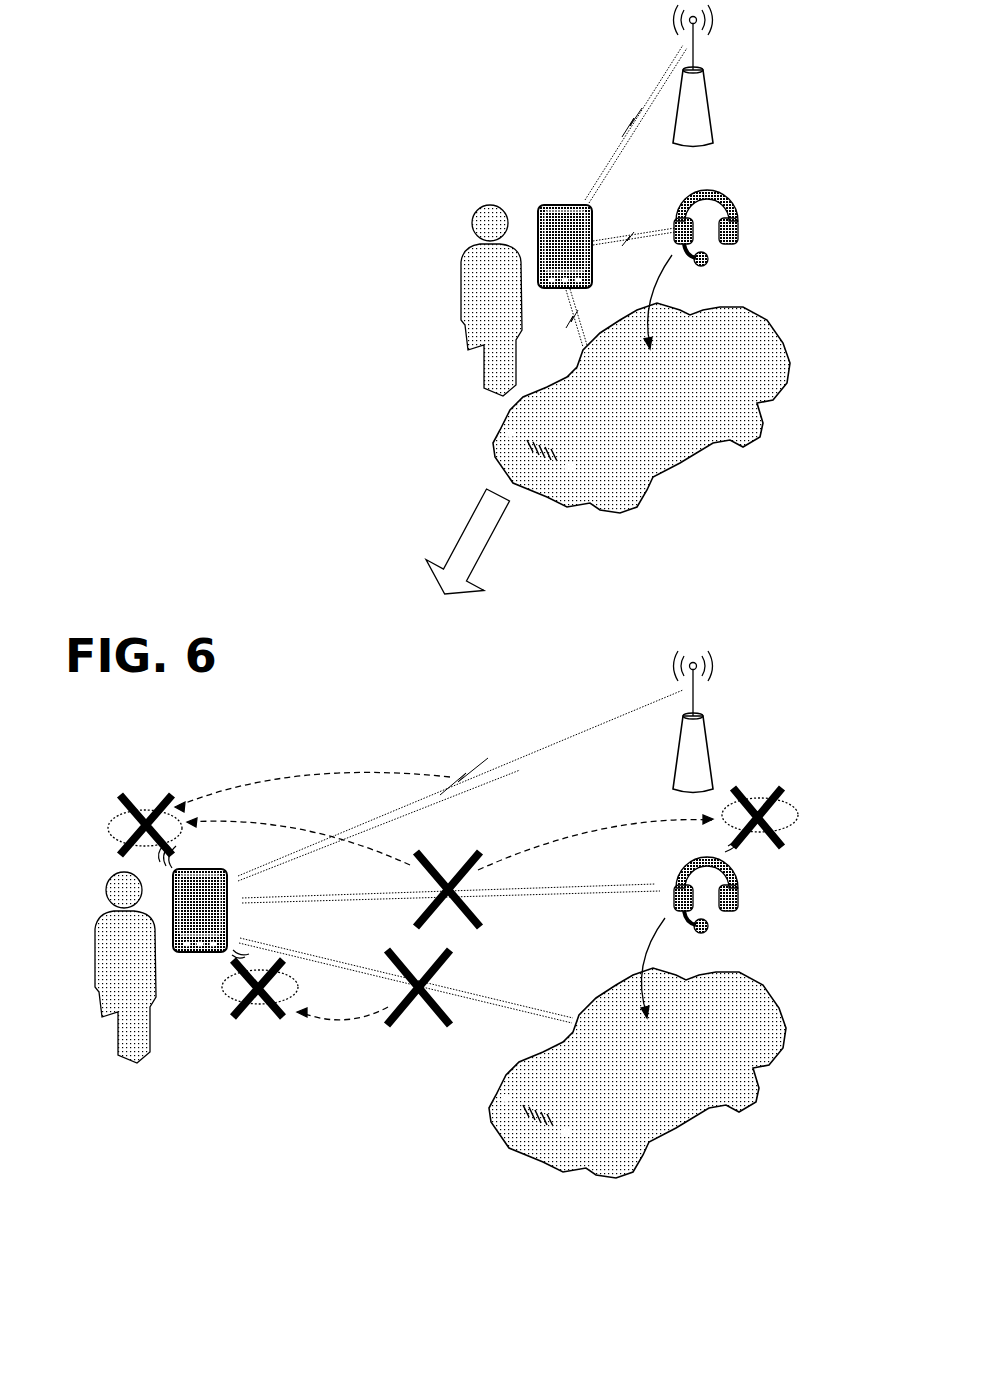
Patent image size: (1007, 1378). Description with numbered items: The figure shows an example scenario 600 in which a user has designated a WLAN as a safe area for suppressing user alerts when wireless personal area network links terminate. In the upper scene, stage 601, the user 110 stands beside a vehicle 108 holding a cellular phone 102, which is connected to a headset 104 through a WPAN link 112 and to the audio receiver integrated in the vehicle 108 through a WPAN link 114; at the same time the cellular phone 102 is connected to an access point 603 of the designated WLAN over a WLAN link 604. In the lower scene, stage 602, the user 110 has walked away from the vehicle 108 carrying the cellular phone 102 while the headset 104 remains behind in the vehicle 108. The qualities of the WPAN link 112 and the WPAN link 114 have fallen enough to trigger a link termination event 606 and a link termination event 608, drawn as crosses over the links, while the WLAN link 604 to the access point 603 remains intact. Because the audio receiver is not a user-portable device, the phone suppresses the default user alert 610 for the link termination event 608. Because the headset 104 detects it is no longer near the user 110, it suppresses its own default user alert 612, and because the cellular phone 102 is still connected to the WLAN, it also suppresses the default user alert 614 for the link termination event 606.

The scenario 600 is at (147, 469).
The stage 601 is at (754, 179).
The stage 602 is at (762, 756).
The access point 603 is at (716, 118).
The WLAN link 604 is at (633, 122).
The link termination event 606 is at (416, 915).
The link termination event 608 is at (440, 965).
The default user alert 610 is at (258, 1016).
The default user alert 612 is at (798, 816).
The default user alert 614 is at (143, 798).
The cellular phone 102 is at (567, 205).
The headset 104 is at (740, 232).
The vehicle 108 is at (790, 366).
The user 110 is at (470, 356).
The WPAN link 112 is at (628, 245).
The WPAN link 114 is at (571, 320).